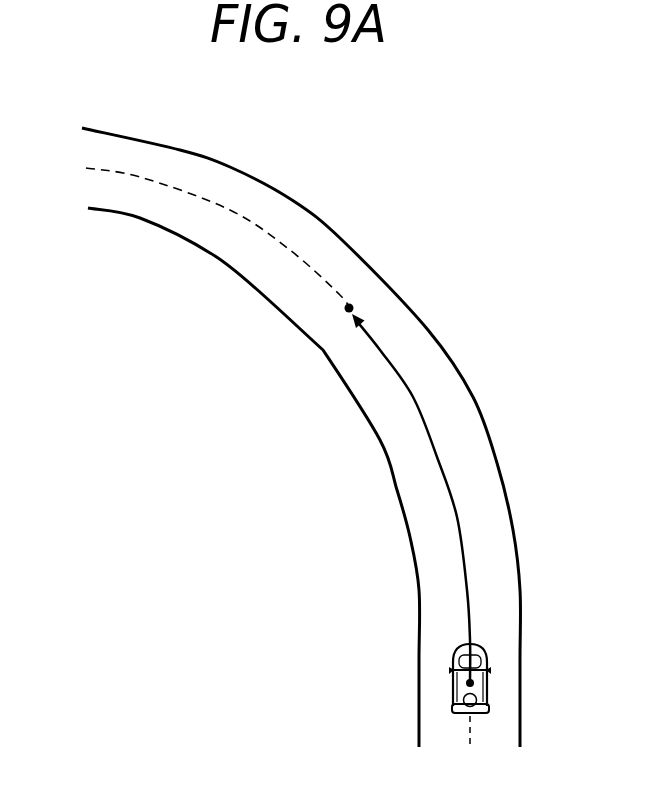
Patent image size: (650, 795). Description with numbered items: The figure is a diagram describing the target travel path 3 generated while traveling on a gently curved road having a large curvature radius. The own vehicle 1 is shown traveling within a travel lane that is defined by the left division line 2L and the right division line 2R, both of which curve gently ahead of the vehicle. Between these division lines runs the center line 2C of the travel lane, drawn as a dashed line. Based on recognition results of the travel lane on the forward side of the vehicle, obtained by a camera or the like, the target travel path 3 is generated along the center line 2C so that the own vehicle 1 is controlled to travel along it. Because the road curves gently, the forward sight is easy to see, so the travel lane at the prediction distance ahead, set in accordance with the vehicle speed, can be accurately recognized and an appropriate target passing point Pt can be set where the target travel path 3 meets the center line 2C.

The right division line 2R is at (293, 199).
The left division line 2L is at (215, 257).
The center line 2C is at (120, 175).
The target passing point Pt is at (336, 316).
The target travel path 3 is at (438, 455).
The own vehicle 1 is at (477, 717).